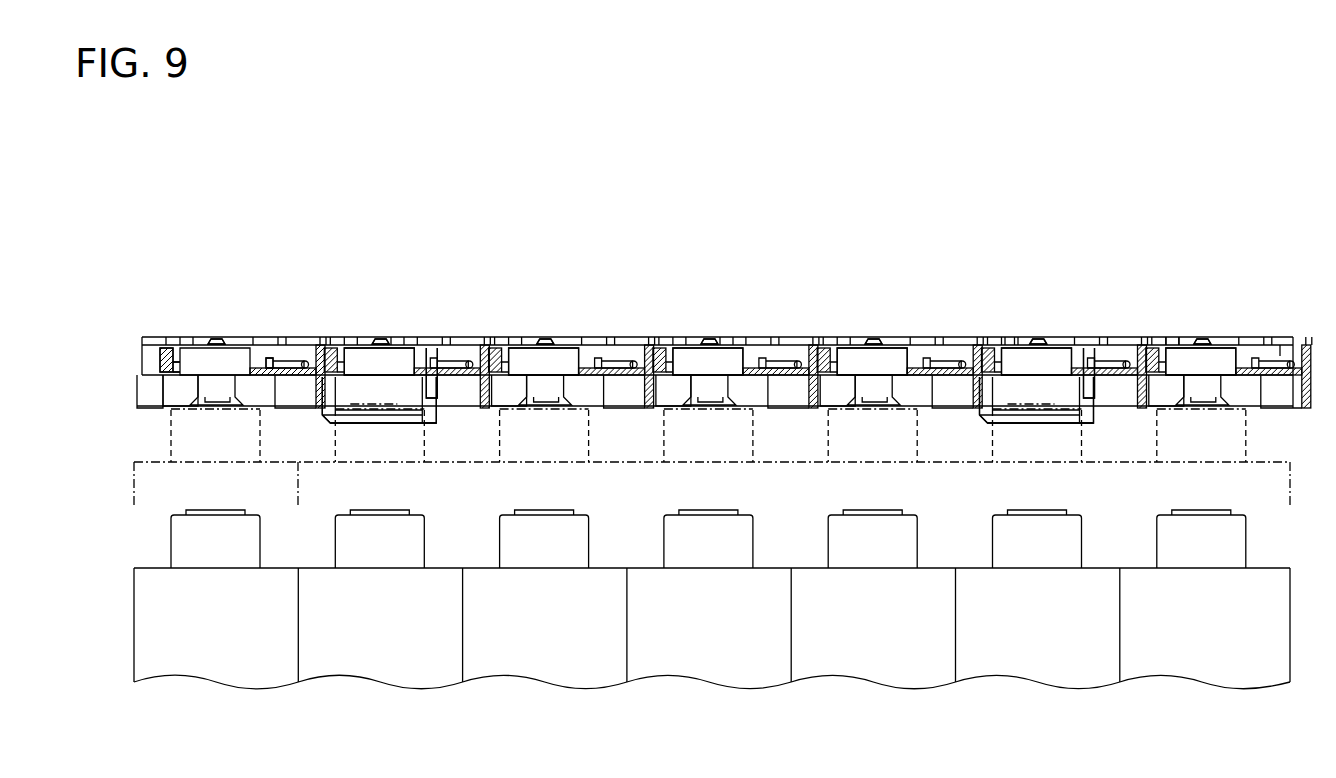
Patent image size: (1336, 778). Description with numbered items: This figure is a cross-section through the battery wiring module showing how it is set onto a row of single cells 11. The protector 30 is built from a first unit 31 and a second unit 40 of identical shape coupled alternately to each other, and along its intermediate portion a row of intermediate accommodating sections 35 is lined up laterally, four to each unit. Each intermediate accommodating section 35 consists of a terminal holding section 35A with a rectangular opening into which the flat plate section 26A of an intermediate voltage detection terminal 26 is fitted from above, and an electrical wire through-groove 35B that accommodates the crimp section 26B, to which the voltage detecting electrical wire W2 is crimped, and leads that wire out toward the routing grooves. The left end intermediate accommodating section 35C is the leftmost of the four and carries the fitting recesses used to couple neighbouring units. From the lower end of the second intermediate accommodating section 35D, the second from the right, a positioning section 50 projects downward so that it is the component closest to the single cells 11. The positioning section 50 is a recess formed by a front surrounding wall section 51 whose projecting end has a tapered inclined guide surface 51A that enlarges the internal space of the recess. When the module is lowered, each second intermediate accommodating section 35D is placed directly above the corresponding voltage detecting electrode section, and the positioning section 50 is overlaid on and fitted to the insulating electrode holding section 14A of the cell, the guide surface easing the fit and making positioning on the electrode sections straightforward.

The single cell 11 is at (215, 657).
The electrode holding section 14A is at (185, 548).
The intermediate voltage detection terminal 26 is at (362, 364).
The flat plate section 26A is at (190, 374).
The crimp section 26B is at (262, 366).
The protector 30 is at (121, 333).
The first unit 31 is at (465, 204).
The intermediate accommodating section 35 is at (212, 326).
The terminal holding section 35A is at (1172, 338).
The electrical wire through-groove 35B is at (1283, 355).
The left end intermediate accommodating section 35C is at (733, 326).
The second intermediate accommodating section 35D is at (404, 326).
The second unit 40 is at (981, 204).
The positioning section 50 is at (320, 386).
The front surrounding wall section 51 is at (432, 392).
The inclined guide surface 51A is at (437, 432).
The voltage detecting electrical wire W2 is at (290, 362).